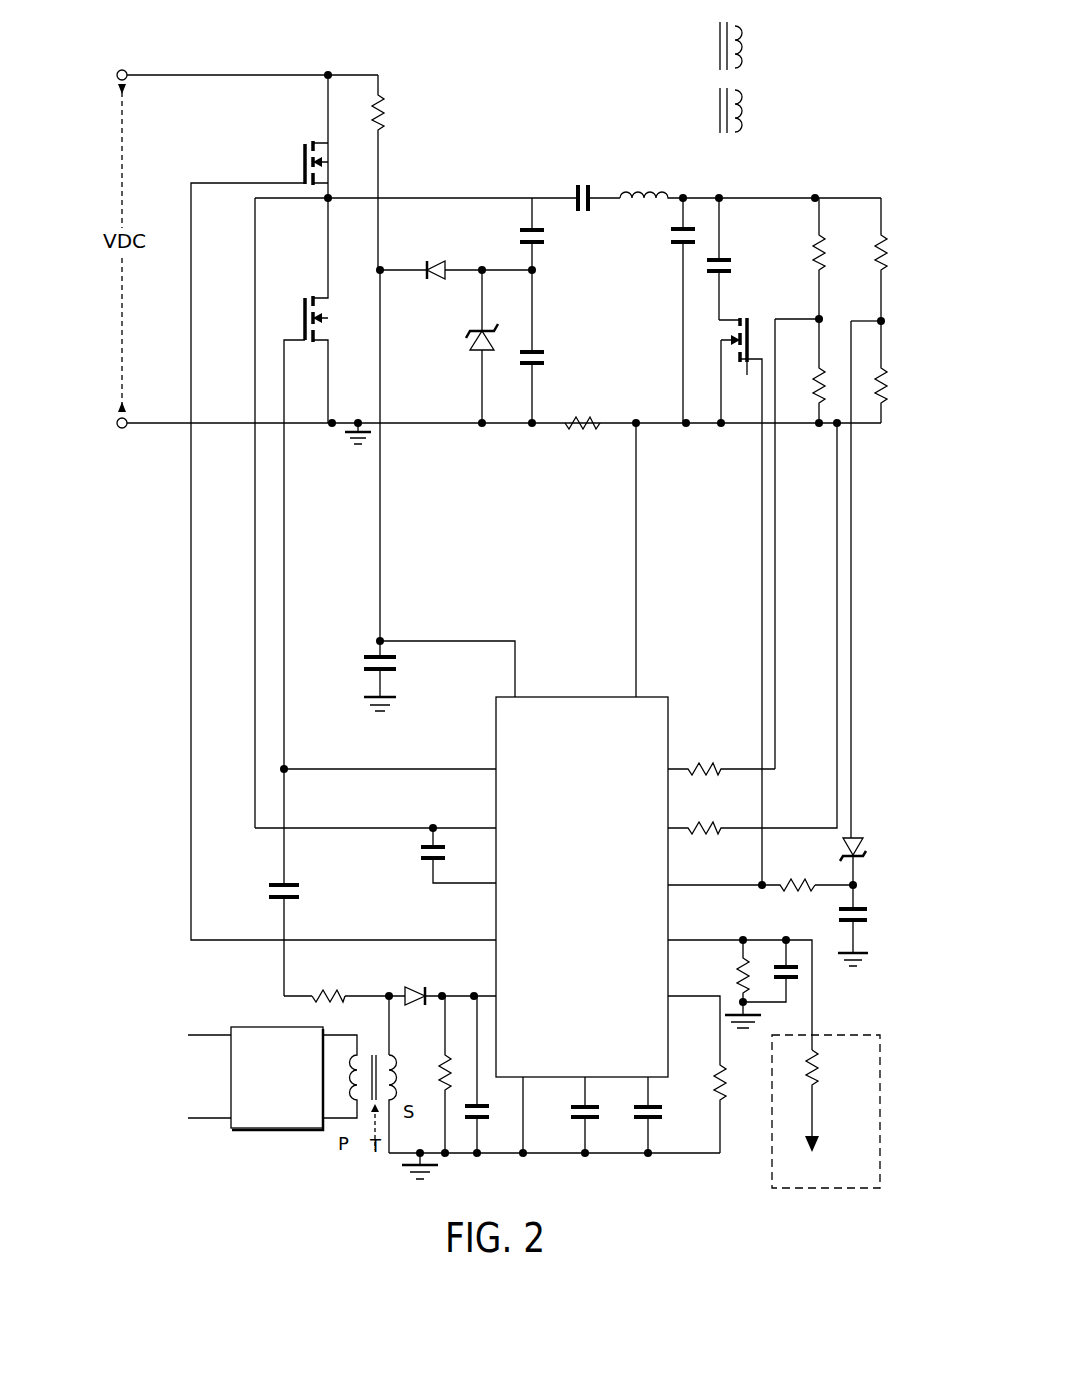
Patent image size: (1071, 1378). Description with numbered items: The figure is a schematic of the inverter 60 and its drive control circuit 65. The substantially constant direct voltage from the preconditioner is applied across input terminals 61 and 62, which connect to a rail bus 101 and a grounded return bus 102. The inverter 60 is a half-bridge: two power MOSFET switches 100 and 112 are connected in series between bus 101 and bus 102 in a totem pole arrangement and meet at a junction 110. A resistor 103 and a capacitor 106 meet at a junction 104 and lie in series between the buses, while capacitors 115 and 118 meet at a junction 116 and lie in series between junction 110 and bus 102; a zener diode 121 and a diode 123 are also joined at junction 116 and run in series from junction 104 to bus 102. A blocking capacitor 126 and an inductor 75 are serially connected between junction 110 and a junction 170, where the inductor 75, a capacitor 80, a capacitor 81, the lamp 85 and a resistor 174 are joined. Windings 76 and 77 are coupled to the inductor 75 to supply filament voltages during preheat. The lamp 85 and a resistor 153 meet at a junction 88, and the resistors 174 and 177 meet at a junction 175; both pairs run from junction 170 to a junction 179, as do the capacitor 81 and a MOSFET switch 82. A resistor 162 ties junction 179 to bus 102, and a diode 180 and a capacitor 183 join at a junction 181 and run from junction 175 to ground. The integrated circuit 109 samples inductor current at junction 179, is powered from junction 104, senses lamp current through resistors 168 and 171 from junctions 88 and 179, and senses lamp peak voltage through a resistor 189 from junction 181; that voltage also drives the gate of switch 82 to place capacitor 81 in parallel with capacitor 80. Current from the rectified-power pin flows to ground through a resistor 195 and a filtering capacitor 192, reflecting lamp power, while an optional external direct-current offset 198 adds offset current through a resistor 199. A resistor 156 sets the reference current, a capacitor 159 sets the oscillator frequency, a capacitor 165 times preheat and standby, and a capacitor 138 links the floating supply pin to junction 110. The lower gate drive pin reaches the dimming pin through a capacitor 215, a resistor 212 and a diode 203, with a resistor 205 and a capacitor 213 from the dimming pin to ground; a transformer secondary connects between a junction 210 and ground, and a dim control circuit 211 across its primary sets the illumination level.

The input terminal 61 is at (118, 70).
The input terminal 62 is at (116, 422).
The B+ rail bus 101 is at (242, 73).
The grounded return bus 102 is at (154, 426).
The resistor 103 is at (384, 113).
The switch 100 is at (304, 150).
The junction 110 is at (329, 201).
The switch 112 is at (301, 299).
The junction 104 is at (375, 272).
The diode 123 is at (433, 262).
The zener diode 121 is at (478, 350).
The capacitor 115 is at (544, 235).
The junction 116 is at (535, 272).
The capacitor 118 is at (546, 358).
The resistor 162 is at (576, 430).
The junction 179 is at (687, 428).
The capacitor 106 is at (383, 668).
The integrated circuit 109 is at (571, 697).
The D.C. blocking capacitor 126 is at (580, 186).
The inductor 75 is at (642, 190).
The winding 76 is at (741, 54).
The winding 77 is at (741, 116).
The inverter 60 is at (635, 78).
The drive control circuit 65 is at (610, 100).
The capacitor 80 is at (673, 238).
The capacitor 81 is at (731, 265).
The switch 82 is at (747, 313).
The fluorescent lamp 85 is at (810, 251).
The junction 88 is at (814, 318).
The resistor 153 is at (813, 388).
The junction 170 is at (815, 196).
The resistor 174 is at (884, 252).
The junction 175 is at (883, 325).
The resistor 177 is at (885, 398).
The resistor 168 is at (694, 768).
The resistor 171 is at (702, 826).
The diode 180 is at (860, 839).
The junction 181 is at (858, 885).
The resistor 189 is at (790, 884).
The capacitor 183 is at (864, 923).
The capacitor 192 is at (789, 960).
The resistor 195 is at (735, 987).
The optional external D.C. offset 198 is at (884, 1056).
The resistor 199 is at (818, 1069).
The capacitor 215 is at (272, 891).
The capacitor 138 is at (423, 854).
The resistor 212 is at (315, 990).
The junction 210 is at (387, 992).
The diode 203 is at (418, 988).
The resistor 205 is at (438, 1064).
The capacitor 213 is at (484, 1116).
The dim control circuit 211 is at (284, 1138).
The capacitor 165 is at (577, 1112).
The capacitor 159 is at (658, 1112).
The resistor 156 is at (724, 1088).